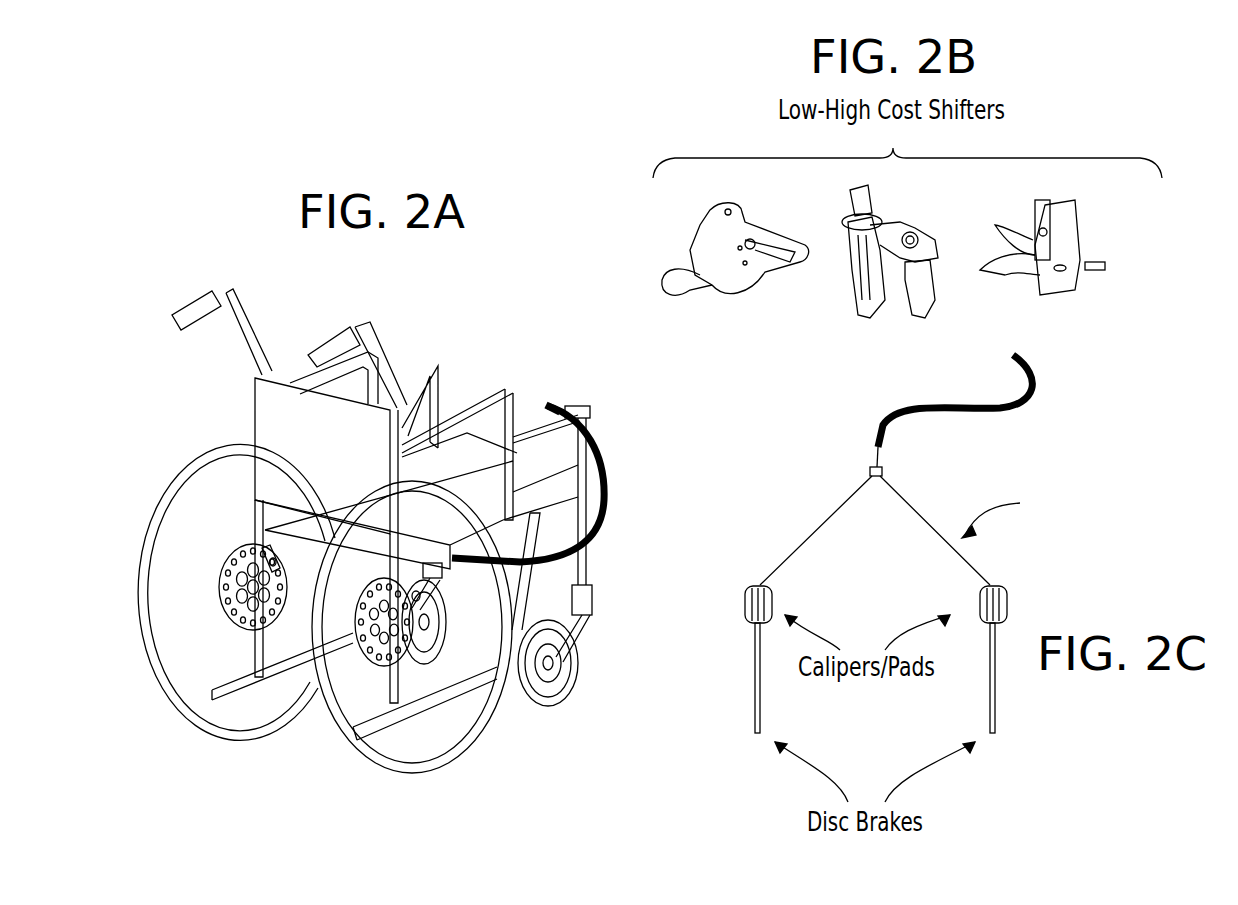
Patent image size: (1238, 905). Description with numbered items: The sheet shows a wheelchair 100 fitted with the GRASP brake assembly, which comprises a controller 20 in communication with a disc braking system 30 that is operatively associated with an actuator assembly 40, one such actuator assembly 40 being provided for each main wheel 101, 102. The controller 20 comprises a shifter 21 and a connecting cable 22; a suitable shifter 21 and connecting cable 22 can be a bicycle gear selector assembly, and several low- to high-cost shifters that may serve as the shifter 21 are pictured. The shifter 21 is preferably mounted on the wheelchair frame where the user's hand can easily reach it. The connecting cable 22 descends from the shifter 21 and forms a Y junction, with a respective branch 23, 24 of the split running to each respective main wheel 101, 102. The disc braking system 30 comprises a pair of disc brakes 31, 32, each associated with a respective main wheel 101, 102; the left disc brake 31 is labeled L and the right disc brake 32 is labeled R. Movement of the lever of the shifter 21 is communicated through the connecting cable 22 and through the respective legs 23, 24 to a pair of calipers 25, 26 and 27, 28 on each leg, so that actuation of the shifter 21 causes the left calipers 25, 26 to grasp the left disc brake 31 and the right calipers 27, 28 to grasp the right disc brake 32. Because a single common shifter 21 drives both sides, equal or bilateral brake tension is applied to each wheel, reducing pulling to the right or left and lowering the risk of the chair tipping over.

In FIG. 2A, the wheelchair 100 is at (192, 298).
In FIG. 2A, the main wheel 101 is at (410, 773).
In FIG. 2A, the main wheel 102 is at (170, 693).
In FIG. 2A, the controller 20 is at (557, 405).
In FIG. 2A, the shifter 21 is at (577, 410).
In FIG. 2B, the shifter 21 is at (843, 233).
In FIG. 2A, the connecting cable 22 is at (607, 440).
In FIG. 2C, the connecting cable 22 is at (1035, 393).
In FIG. 2C, the branch (leg) of Y-split 23 is at (893, 480).
In FIG. 2C, the branch (leg) of Y-split 24 is at (838, 507).
In FIG. 2C, the left caliper 25 is at (1008, 590).
In FIG. 2C, the left caliper 26 is at (978, 597).
In FIG. 2C, the right caliper 27 is at (772, 597).
In FIG. 2C, the right caliper 28 is at (748, 590).
In FIG. 2A, the disc braking system 30 is at (253, 537).
In FIG. 2C, the left disc brake 31 is at (996, 703).
In FIG. 2A, the right disc brake 32 is at (217, 602).
In FIG. 2C, the right disc brake 32 is at (755, 692).
In FIG. 2A, the actuator assembly 40 is at (230, 553).